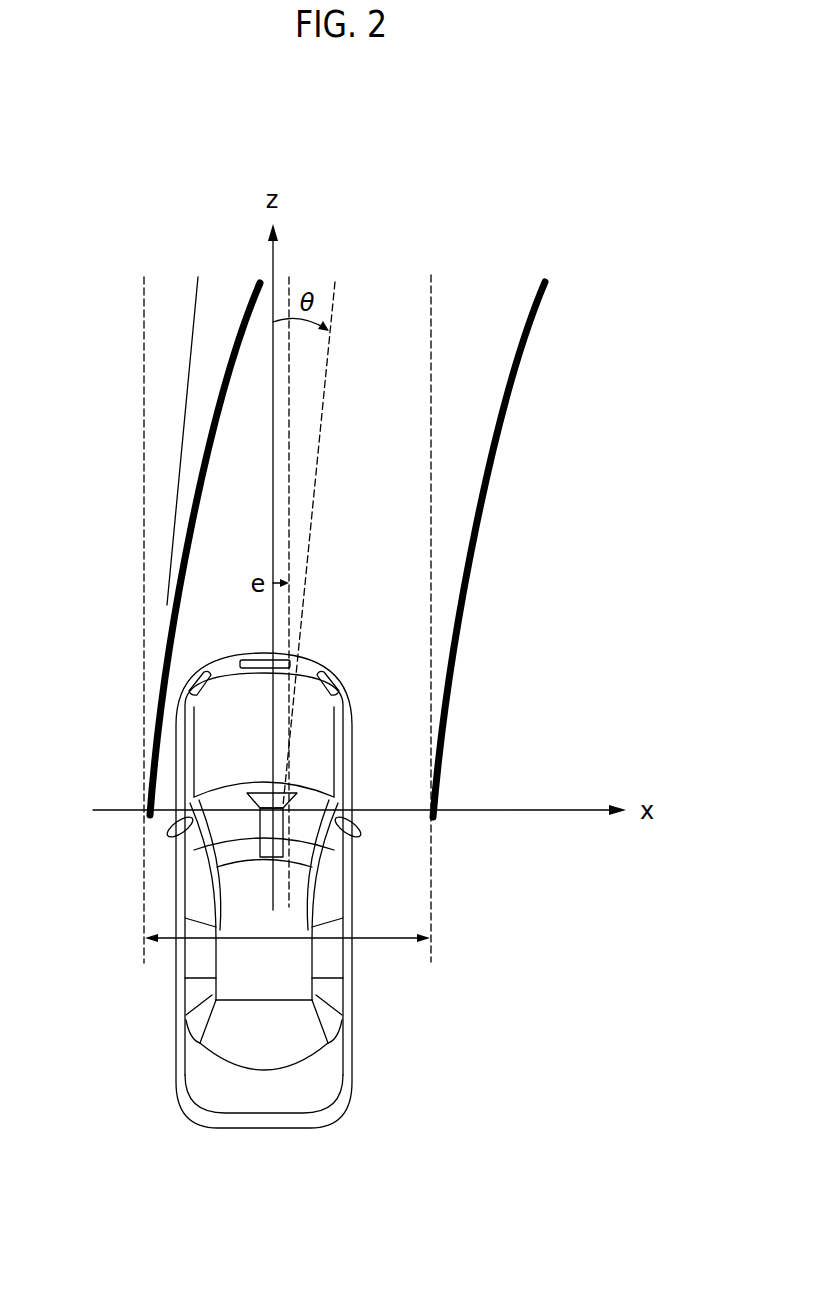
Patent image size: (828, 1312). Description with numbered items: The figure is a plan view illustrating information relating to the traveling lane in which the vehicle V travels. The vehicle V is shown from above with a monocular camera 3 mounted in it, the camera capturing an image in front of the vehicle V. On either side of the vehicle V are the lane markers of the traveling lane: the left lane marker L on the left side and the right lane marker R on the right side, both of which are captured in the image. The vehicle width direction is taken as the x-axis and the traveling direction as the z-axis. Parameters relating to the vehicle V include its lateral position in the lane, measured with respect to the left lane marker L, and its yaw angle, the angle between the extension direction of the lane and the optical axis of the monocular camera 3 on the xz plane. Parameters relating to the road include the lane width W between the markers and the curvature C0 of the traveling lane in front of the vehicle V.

The monocular camera 3 is at (260, 837).
The left lane marker L is at (188, 500).
The right lane marker R is at (472, 552).
The curvature C0 is at (548, 388).
The vehicle V is at (352, 1057).
The lane width W is at (380, 938).